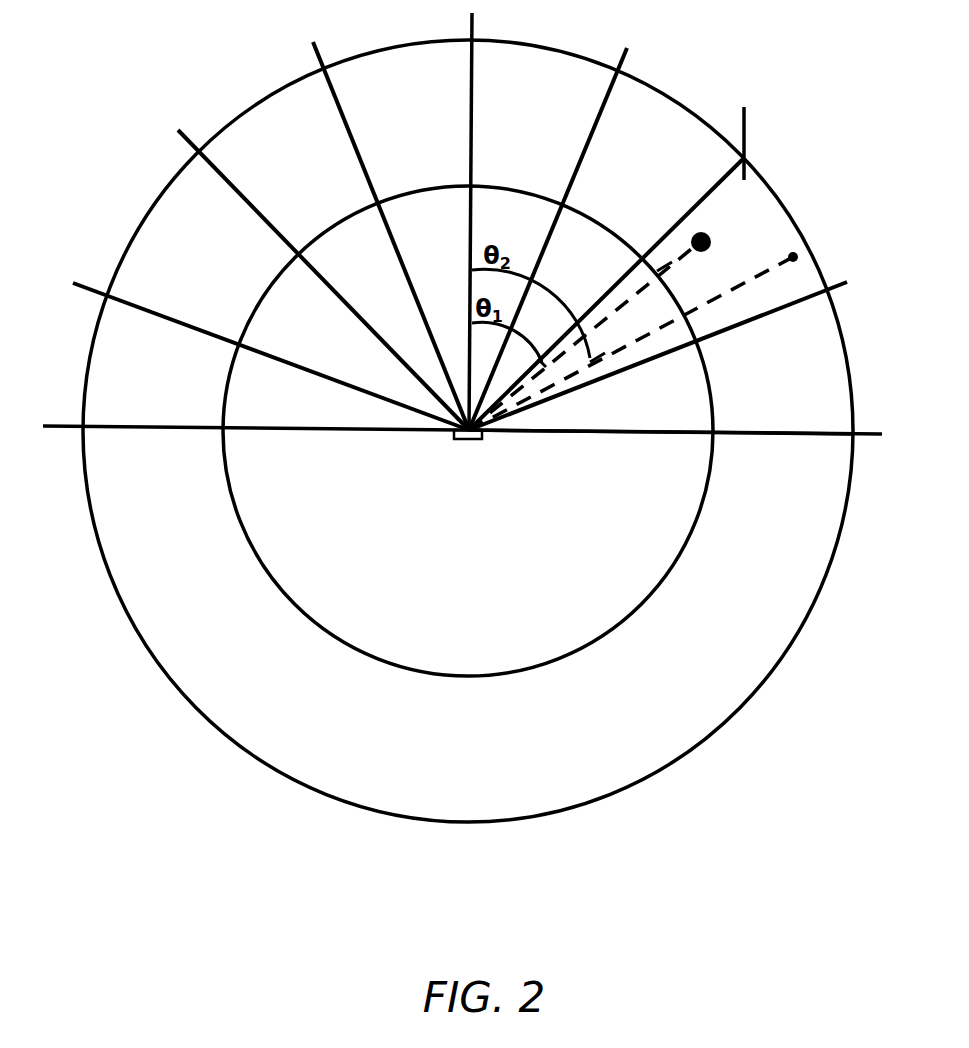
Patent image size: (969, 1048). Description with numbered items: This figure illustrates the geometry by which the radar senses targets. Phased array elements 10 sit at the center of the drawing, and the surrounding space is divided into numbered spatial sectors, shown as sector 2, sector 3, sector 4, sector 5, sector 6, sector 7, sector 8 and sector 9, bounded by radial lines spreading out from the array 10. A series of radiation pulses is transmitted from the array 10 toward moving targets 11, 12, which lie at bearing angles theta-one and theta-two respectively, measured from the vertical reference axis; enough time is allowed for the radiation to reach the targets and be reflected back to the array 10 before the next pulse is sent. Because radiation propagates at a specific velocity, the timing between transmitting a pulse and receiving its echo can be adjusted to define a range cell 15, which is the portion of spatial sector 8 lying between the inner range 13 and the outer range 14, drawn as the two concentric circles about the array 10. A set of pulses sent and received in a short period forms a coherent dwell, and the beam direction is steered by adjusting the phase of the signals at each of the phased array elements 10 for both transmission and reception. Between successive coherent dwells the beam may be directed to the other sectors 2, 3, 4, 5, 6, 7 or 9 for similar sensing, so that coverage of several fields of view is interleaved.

The spatial sector 2 is at (271, 356).
The spatial sector 3 is at (314, 280).
The spatial sector 4 is at (367, 236).
The spatial sector 5 is at (431, 221).
The spatial sector 6 is at (548, 239).
The spatial sector 7 is at (606, 272).
The spatial sector 8 is at (658, 322).
The spatial sector 9 is at (661, 389).
The phased array elements 10 is at (478, 439).
The moving target 11 is at (708, 234).
The moving target 12 is at (797, 253).
The range 13 is at (650, 254).
The range 14 is at (757, 166).
The range cell 15 is at (741, 129).